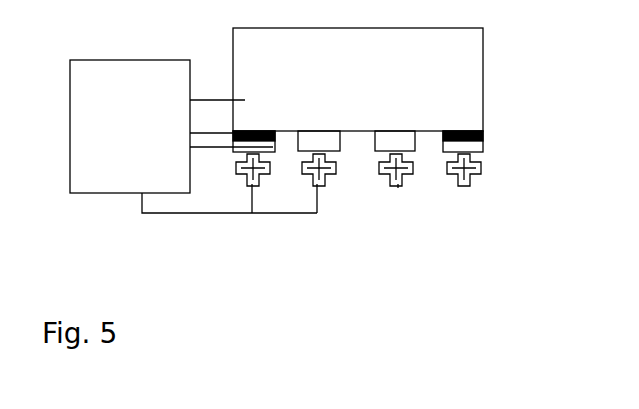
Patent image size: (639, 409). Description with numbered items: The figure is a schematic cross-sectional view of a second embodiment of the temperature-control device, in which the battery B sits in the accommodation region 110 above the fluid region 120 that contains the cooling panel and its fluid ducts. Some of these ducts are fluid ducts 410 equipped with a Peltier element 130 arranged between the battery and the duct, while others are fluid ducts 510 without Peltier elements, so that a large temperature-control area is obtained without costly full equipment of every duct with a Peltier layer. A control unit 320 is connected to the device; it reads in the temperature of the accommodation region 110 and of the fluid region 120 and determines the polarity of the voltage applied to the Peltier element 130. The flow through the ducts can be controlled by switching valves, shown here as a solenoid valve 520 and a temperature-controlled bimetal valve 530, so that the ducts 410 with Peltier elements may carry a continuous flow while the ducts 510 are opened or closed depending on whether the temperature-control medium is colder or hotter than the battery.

The accommodation region 110 is at (392, 79).
The fluid region 120 is at (395, 216).
The Peltier element 130 is at (484, 141).
The control unit 320 is at (193, 136).
The fluid duct with Peltier element 410 is at (483, 152).
The fluid duct without Peltier element 510 is at (418, 150).
The solenoid valve 520 is at (286, 208).
The temperature-controlled bimetal valve 530 is at (398, 186).